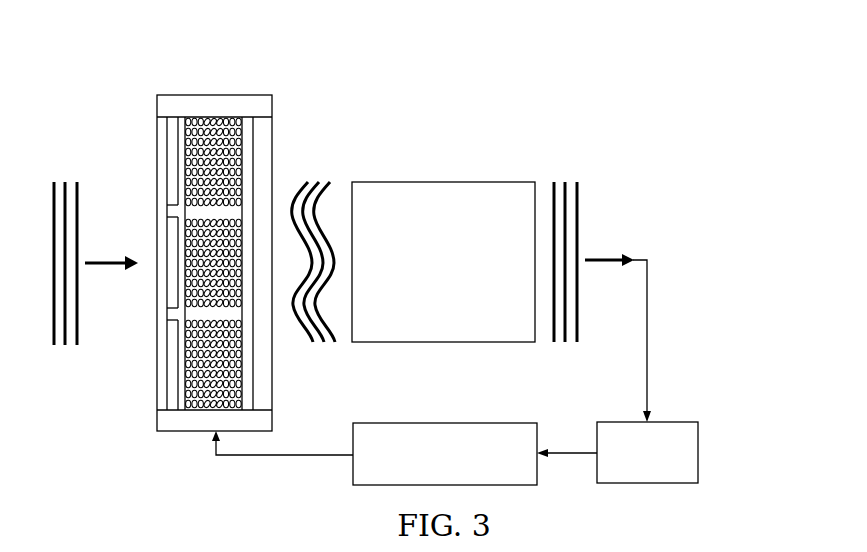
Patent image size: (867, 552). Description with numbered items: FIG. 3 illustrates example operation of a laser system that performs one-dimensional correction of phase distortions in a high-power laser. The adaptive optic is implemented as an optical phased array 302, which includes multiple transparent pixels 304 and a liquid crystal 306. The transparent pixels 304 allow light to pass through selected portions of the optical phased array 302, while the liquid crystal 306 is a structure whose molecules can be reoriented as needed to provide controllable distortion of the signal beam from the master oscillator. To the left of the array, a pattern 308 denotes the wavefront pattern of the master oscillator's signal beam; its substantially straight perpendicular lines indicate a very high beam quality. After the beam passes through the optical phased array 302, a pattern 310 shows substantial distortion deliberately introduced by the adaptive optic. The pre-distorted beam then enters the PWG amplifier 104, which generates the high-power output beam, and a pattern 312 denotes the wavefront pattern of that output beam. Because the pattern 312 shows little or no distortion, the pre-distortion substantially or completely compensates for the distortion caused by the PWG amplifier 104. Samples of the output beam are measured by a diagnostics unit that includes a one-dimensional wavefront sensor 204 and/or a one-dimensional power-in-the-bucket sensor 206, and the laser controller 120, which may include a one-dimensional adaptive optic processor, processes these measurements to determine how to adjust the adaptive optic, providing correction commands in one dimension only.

The optical phased array 302 is at (181, 234).
The transparent pixels 304 is at (176, 242).
The liquid crystal 306 is at (184, 376).
The pattern 308 is at (51, 174).
The pattern 310 is at (290, 174).
The pattern 312 is at (551, 174).
The PWG amplifier 104 is at (424, 302).
The laser controller 120 is at (447, 422).
The wavefront sensor 204 is at (702, 453).
The power-in-the-bucket sensor 206 is at (699, 462).